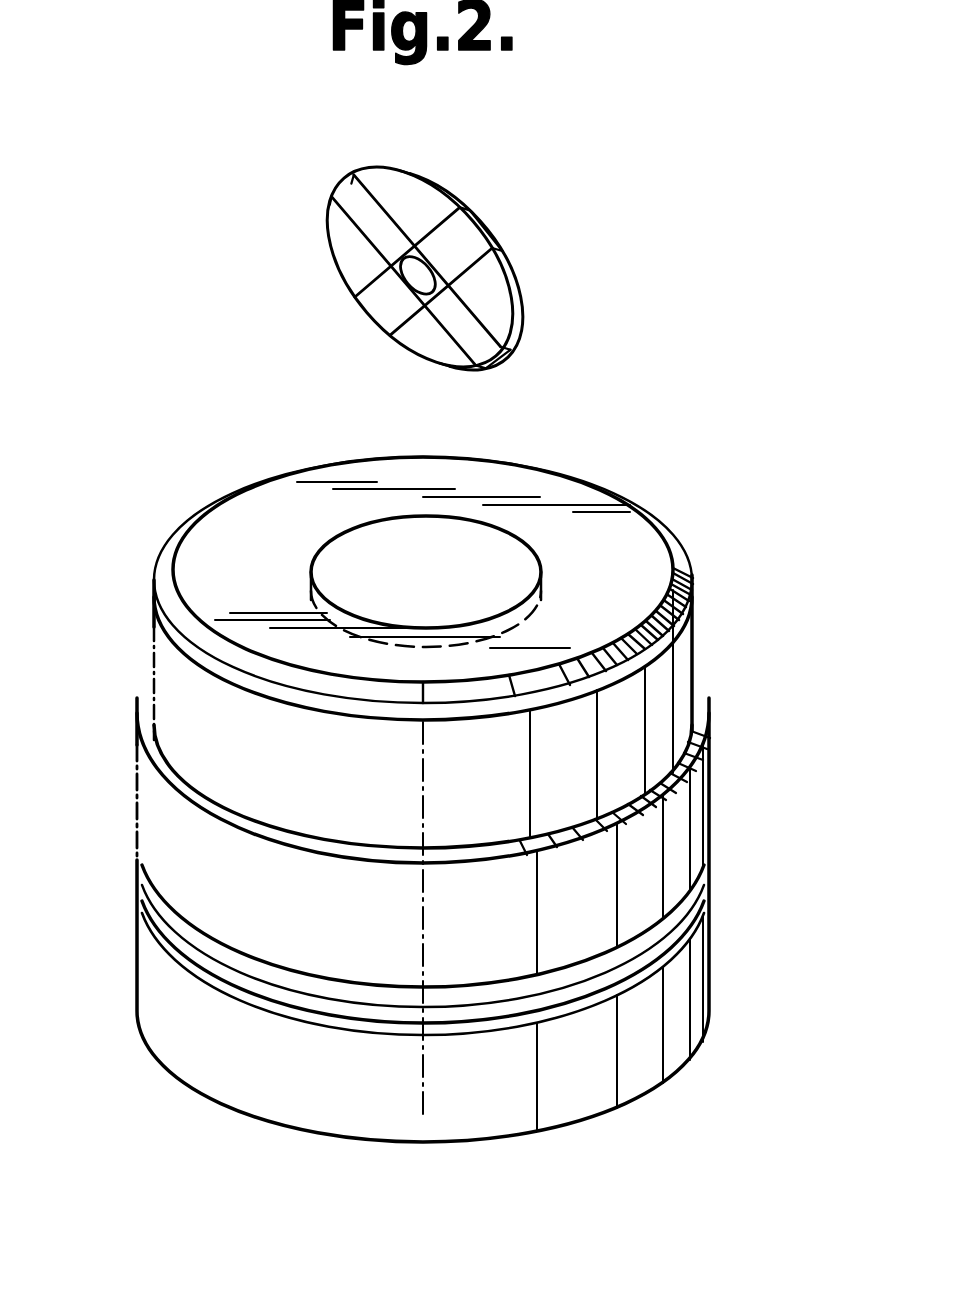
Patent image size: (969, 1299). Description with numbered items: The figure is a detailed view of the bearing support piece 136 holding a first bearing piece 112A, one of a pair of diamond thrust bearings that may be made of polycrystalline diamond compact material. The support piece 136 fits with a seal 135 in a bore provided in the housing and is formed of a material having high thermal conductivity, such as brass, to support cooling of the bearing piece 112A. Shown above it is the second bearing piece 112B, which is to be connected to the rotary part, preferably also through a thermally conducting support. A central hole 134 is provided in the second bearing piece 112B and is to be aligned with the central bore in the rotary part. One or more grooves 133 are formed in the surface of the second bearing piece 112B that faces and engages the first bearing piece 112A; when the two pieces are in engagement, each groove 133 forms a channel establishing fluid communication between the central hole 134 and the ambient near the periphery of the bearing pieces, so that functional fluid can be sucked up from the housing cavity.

The first bearing piece 112A is at (483, 537).
The second bearing piece 112B is at (463, 268).
The grooves 133 is at (452, 240).
The central hole 134 is at (413, 278).
The seal 135 is at (158, 926).
The bearing support piece 136 is at (662, 680).